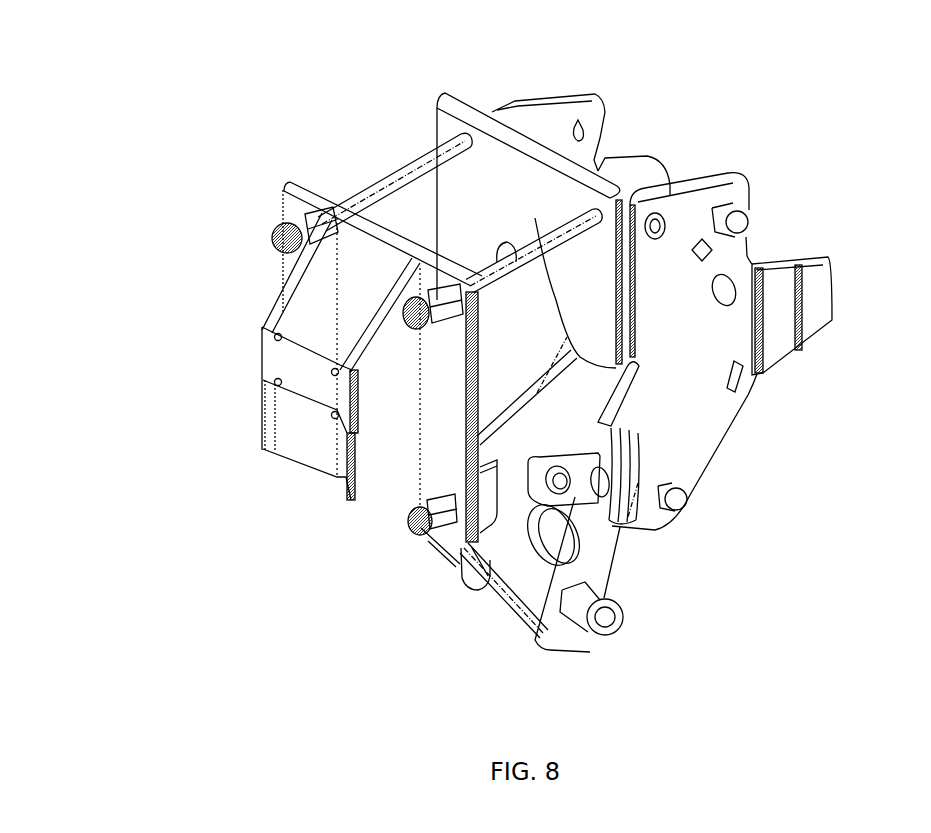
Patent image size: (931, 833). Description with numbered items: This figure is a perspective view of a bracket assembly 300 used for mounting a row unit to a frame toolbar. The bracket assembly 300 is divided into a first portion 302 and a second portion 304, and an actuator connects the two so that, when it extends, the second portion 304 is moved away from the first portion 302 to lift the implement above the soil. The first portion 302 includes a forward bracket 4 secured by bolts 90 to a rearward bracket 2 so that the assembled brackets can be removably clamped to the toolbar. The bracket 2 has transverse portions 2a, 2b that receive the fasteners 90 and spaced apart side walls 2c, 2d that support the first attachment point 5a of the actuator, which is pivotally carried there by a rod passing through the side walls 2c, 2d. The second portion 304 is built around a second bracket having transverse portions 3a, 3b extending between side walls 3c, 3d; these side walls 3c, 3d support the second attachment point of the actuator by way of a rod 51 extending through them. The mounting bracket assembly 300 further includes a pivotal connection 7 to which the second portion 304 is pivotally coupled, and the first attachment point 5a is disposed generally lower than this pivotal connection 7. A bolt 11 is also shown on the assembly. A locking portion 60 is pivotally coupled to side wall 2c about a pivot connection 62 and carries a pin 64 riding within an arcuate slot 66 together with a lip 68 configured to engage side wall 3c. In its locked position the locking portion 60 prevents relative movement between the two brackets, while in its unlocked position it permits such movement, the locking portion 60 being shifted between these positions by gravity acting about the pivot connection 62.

The bracket assembly 300 is at (85, 88).
The first portion 302 is at (357, 513).
The second portion 304 is at (748, 158).
The bracket 2 is at (511, 565).
The transverse portion 2a is at (487, 480).
The transverse portion 2b is at (570, 195).
The side wall 2c is at (607, 560).
The side wall 2d is at (450, 570).
The transverse portion 3a is at (702, 250).
The transverse portion 3b is at (749, 375).
The side wall 3c is at (717, 417).
The side wall 3d is at (587, 107).
The forward bracket 4 is at (278, 350).
The first attachment point 5a is at (488, 575).
The pivotal connection 7 is at (658, 242).
The bolt 11 is at (745, 216).
The rod 51 is at (723, 300).
The locking portion 60 is at (551, 567).
The pivot connection 62 is at (560, 468).
The pin 64 is at (607, 507).
The arcuate slot 66 is at (610, 443).
The lip 68 is at (641, 441).
The bolts 90 is at (384, 176).